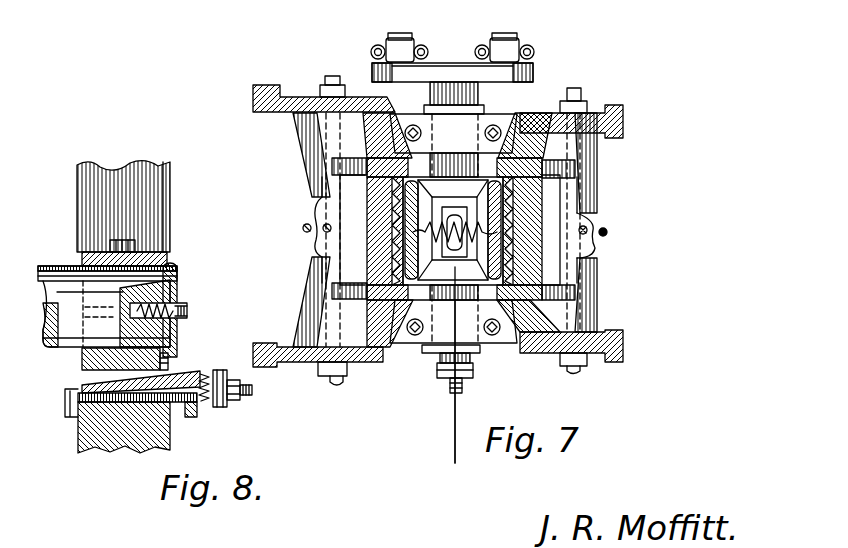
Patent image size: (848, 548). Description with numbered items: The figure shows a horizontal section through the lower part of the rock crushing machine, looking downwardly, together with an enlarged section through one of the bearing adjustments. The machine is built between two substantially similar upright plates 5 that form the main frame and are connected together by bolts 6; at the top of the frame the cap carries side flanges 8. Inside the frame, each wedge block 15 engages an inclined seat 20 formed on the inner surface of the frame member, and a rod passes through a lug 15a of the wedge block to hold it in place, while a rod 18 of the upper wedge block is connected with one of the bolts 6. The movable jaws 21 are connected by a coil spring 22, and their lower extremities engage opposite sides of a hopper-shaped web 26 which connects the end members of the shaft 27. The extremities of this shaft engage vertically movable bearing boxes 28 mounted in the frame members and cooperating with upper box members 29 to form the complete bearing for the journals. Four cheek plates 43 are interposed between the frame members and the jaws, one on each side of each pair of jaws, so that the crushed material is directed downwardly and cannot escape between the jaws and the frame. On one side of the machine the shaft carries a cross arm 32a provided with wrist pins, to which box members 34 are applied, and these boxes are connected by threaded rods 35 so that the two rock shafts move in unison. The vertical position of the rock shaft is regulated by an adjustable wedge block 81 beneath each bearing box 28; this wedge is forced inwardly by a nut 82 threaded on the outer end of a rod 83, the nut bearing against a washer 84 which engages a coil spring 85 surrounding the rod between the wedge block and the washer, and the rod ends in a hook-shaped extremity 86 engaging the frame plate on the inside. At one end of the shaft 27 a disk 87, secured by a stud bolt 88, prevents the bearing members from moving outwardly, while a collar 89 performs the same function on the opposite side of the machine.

In FIG. 7, the upright plate 5 is at (292, 100).
In FIG. 8, the upright plate 5 is at (112, 206).
In FIG. 7, the bolt 6 is at (320, 205).
In FIG. 7, the side flange 8 is at (445, 270).
In FIG. 7, the wedge block 15 is at (345, 245).
In FIG. 7, the lug 15a is at (645, 207).
In FIG. 7, the rod 18 is at (607, 232).
In FIG. 7, the seat 20 is at (300, 128).
In FIG. 7, the movable jaw 21 is at (360, 178).
In FIG. 7, the coil spring 22 is at (413, 243).
In FIG. 7, the hopper-shaped web 26 is at (598, 170).
In FIG. 7, the shaft 27 is at (470, 95).
In FIG. 8, the shaft 27 is at (62, 266).
In FIG. 8, the bearing box 28 is at (168, 356).
In FIG. 7, the upper box member 29 is at (500, 338).
In FIG. 8, the upper box member 29 is at (152, 250).
In FIG. 7, the cross arm 32a is at (442, 70).
In FIG. 7, the box member 34 is at (393, 48).
In FIG. 7, the threaded rod 35 is at (421, 45).
In FIG. 7, the cheek plate 43 is at (365, 158).
In FIG. 8, the adjustable wedge block 81 is at (172, 374).
In FIG. 7, the nut 82 is at (470, 374).
In FIG. 8, the nut 82 is at (230, 402).
In FIG. 7, the rod 83 is at (455, 384).
In FIG. 8, the rod 83 is at (245, 396).
In FIG. 8, the washer 84 is at (218, 407).
In FIG. 8, the coil spring 85 is at (207, 408).
In FIG. 8, the hook-shaped extremity 86 is at (67, 417).
In FIG. 8, the disk 87 is at (177, 268).
In FIG. 8, the stud bolt 88 is at (187, 313).
In FIG. 7, the collar 89 is at (420, 108).